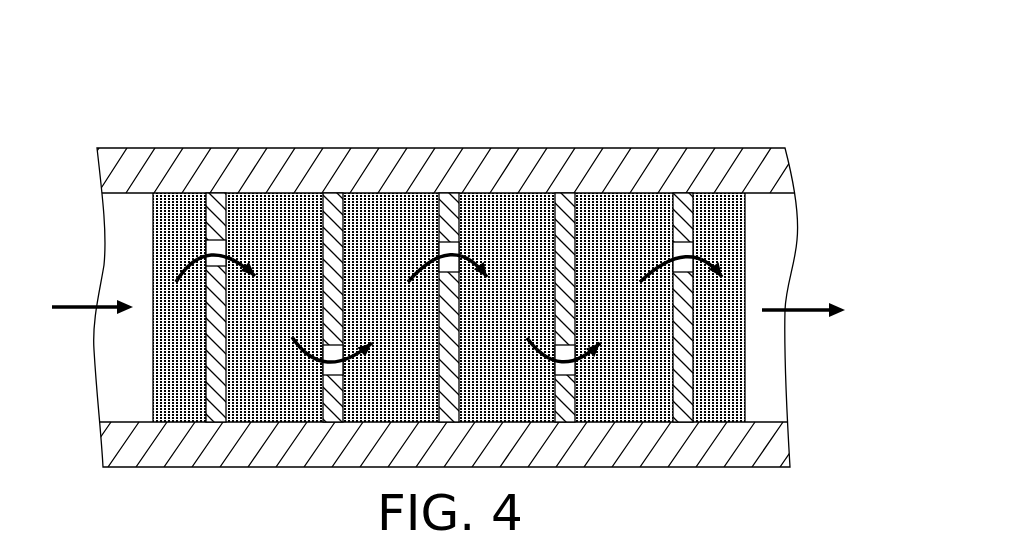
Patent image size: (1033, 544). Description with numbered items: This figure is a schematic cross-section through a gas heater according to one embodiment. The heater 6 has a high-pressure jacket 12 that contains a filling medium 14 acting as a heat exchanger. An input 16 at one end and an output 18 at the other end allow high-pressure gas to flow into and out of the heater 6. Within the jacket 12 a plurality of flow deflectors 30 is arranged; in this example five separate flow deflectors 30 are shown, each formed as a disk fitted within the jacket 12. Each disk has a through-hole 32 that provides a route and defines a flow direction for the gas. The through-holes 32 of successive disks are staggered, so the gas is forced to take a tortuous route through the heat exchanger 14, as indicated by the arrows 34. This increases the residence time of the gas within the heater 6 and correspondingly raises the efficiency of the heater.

The heater 6 is at (751, 104).
The high-pressure jacket 12 is at (441, 165).
The filling medium 14 is at (277, 207).
The input 16 is at (80, 215).
The output 18 is at (818, 215).
The flow deflector 30 is at (204, 407).
The through-hole 32 is at (206, 249).
The arrows 34 is at (320, 357).